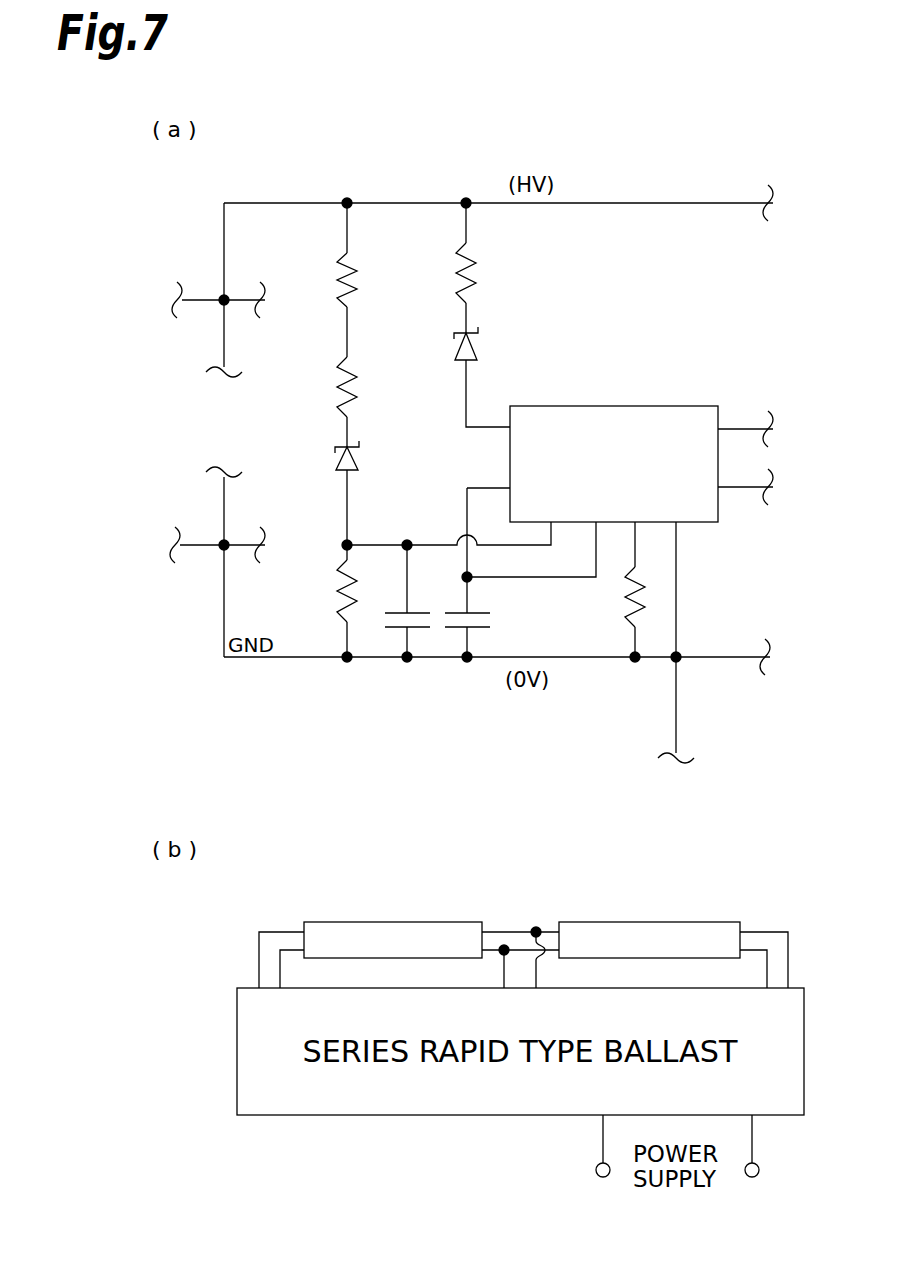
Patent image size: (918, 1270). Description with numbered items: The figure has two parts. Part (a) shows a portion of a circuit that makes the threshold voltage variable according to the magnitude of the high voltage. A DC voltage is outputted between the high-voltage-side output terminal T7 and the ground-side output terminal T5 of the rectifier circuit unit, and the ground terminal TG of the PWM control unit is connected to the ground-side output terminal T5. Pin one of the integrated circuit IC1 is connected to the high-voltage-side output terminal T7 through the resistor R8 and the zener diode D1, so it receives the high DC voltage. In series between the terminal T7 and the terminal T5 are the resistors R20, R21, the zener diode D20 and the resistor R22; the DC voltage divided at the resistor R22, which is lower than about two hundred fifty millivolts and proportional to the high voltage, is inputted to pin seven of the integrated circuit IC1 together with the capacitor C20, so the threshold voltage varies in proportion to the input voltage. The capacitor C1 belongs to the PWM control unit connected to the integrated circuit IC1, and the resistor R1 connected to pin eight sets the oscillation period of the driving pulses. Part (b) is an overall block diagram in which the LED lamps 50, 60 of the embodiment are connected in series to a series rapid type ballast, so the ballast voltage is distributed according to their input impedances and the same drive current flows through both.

The high-voltage (HV)-side output terminal T7 is at (224, 300).
The ground-side output terminal T5 is at (224, 545).
The resistor R20 is at (336, 286).
The resistor R21 is at (336, 392).
The resistor R22 is at (336, 598).
The zener diode D20 is at (336, 451).
The resistor R8 is at (458, 278).
The zener diode D1 is at (456, 340).
The integrated circuit IC1 is at (560, 582).
The capacitor C20 is at (412, 610).
The capacitor C1 is at (480, 612).
The resistor R1 is at (628, 604).
The GND terminal TG is at (680, 661).
The LED lamp 50 is at (443, 928).
The LED lamp 60 is at (712, 930).